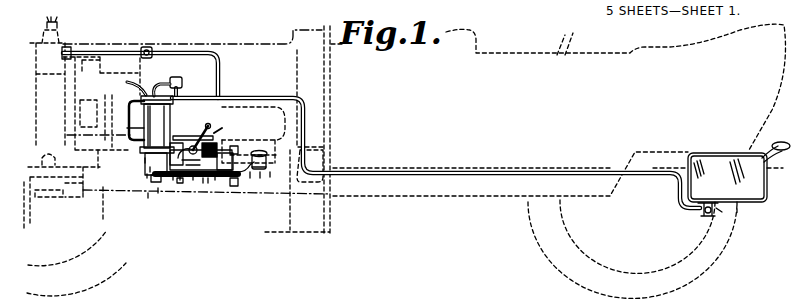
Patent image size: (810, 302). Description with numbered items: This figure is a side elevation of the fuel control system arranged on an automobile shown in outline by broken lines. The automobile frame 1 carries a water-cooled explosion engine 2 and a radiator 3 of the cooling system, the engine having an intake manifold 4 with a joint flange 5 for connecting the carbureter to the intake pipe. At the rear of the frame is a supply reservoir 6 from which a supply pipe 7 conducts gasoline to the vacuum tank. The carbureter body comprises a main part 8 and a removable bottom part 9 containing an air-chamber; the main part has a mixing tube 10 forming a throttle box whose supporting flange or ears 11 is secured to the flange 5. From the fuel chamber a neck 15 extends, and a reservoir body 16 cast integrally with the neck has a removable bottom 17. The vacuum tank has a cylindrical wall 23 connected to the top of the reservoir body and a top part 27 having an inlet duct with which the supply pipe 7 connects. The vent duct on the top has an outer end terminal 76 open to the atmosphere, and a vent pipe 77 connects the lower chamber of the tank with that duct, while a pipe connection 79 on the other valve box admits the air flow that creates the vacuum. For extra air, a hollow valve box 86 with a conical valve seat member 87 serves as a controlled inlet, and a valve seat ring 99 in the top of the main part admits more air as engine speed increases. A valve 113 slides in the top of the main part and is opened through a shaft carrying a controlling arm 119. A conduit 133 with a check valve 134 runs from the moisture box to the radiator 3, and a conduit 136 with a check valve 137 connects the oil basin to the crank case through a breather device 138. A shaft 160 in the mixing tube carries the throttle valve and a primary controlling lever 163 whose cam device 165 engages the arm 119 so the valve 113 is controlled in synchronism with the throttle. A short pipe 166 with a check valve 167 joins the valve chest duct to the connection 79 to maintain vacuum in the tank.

The automobile frame 1 is at (443, 196).
The water-cooled explosion engine 2 is at (107, 93).
The radiator 3 is at (35, 48).
The intake manifold 4 is at (248, 115).
The joint flange 5 is at (228, 133).
The supply reservoir 6 is at (752, 202).
The supply pipe 7 is at (399, 176).
The main part 8 is at (193, 180).
The removable bottom part 9 is at (205, 183).
The mixing tube 10 is at (216, 134).
The supporting flange or ears 11 is at (225, 145).
The neck 15 is at (173, 180).
The reservoir body 16 is at (150, 172).
The removable bottom 17 is at (147, 178).
The cylindrical wall 23 is at (145, 163).
The top part 27 is at (133, 110).
The outer end terminal 76 is at (130, 83).
The vent pipe 77 is at (127, 128).
The pipe connection 79 is at (154, 86).
The hollow valve box 86 is at (215, 180).
The conical valve seat member 87 is at (233, 180).
The valve seat ring 99 is at (208, 183).
The valve 113 is at (148, 198).
The controlling arm 119 is at (158, 193).
The conduit 133 is at (111, 50).
The check valve 134 is at (152, 49).
The conduit 136 is at (260, 178).
The check valve 137 is at (250, 178).
The breather device 138 is at (270, 177).
The shaft 160 is at (204, 132).
The primary controlling lever 163 is at (218, 126).
The cam device 165 is at (180, 180).
The short pipe 166 is at (186, 92).
The check valve 167 is at (183, 77).